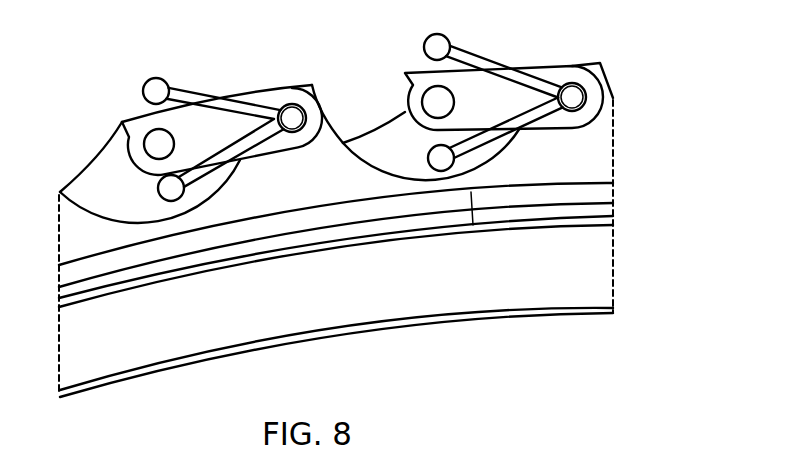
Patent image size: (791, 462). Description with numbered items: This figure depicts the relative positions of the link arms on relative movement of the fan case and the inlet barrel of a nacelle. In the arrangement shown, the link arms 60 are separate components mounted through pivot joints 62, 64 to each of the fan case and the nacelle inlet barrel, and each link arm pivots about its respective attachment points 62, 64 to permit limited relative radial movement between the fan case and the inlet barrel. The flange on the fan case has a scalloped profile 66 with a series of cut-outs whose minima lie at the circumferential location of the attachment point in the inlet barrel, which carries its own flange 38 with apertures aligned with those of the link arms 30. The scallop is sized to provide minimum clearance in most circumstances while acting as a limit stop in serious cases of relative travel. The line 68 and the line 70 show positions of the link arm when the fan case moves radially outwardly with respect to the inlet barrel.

The link arms 30 is at (598, 163).
The flange 38 is at (402, 128).
The link arms 60 is at (524, 148).
The pivot joint 62 is at (583, 90).
The pivot joint 64 is at (433, 97).
The scalloped profile 66 is at (341, 108).
The line 68 is at (483, 137).
The line 70 is at (488, 62).